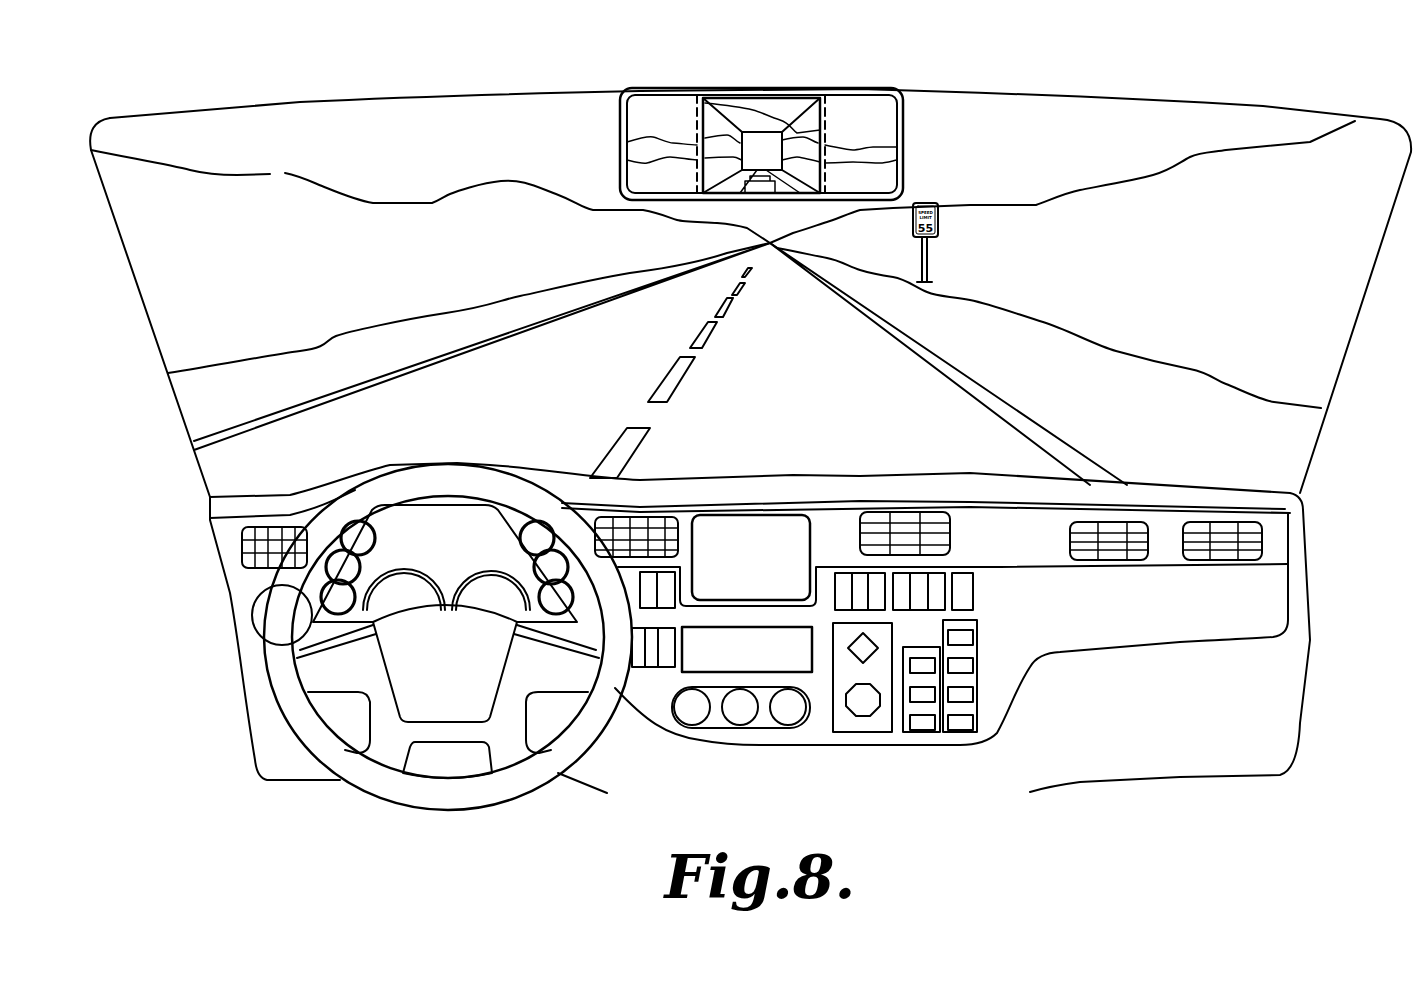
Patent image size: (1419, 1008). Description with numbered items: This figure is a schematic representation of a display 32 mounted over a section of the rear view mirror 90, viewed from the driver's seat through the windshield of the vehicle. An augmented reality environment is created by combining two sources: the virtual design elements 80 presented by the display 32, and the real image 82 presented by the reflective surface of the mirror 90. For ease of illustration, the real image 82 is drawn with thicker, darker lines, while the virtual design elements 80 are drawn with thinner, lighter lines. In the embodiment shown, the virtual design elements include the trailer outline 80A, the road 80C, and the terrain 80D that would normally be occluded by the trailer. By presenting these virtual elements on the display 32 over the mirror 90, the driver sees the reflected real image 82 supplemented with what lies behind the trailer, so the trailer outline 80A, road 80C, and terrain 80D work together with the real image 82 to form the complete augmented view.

The virtual design elements 80 is at (762, 102).
The trailer outline 80A is at (693, 147).
The road 80C is at (822, 172).
The terrain 80D is at (810, 185).
The real image 82 is at (670, 112).
The rear view mirror 90 is at (650, 95).
The display 32 is at (803, 157).